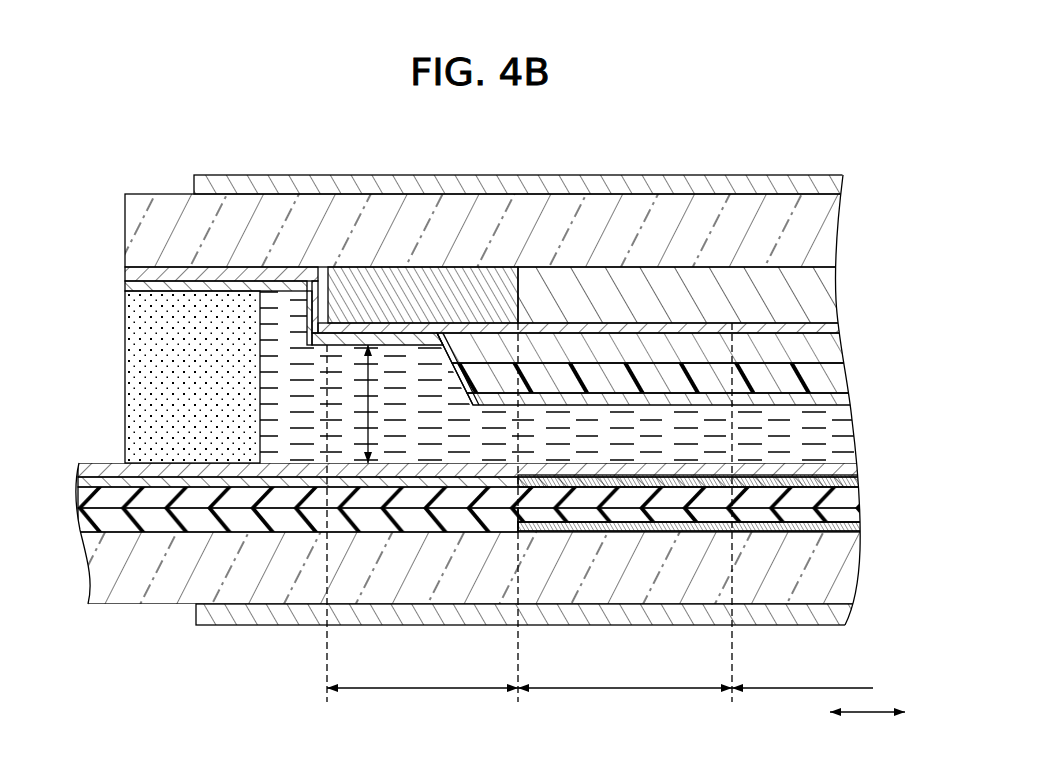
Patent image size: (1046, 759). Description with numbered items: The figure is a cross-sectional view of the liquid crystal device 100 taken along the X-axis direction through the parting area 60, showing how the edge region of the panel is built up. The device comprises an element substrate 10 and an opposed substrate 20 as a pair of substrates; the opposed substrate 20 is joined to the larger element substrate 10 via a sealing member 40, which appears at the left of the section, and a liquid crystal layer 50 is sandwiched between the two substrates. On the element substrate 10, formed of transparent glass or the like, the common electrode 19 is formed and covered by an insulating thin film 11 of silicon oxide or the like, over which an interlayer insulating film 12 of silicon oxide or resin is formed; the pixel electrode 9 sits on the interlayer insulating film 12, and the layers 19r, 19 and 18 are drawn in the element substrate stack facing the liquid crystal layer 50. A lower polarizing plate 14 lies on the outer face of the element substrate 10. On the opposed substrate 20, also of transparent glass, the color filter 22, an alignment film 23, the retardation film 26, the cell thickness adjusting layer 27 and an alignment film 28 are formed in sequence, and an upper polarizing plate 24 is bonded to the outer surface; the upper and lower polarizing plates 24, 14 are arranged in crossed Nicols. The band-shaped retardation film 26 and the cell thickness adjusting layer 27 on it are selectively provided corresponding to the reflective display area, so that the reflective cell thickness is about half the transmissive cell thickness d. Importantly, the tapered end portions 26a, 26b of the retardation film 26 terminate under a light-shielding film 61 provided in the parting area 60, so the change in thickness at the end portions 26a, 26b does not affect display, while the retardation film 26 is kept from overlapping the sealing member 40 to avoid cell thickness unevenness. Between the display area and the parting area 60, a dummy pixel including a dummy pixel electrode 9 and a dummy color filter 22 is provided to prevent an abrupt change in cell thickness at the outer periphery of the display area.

The liquid crystal device 100 is at (838, 143).
The upper polarizing plate 24 is at (828, 182).
The opposed substrate 20 is at (826, 220).
The color filter 22 is at (828, 287).
The alignment film 23 is at (836, 328).
The light-shielding film 61 is at (426, 288).
The retardation film 26 is at (831, 347).
The end portion 26a is at (443, 346).
The end portion 26b is at (461, 369).
The cell thickness adjusting layer 27 is at (838, 382).
The alignment film 28 is at (843, 398).
The sealing member 40 is at (138, 366).
The liquid crystal layer 50 is at (845, 428).
The alignment film 18 is at (850, 470).
The pixel electrode 9 is at (855, 481).
The interlayer insulating film 12 is at (852, 497).
The insulating thin film 11 is at (850, 515).
The dummy wiring 19r is at (646, 531).
The common electrode 19 is at (698, 526).
The element substrate 10 is at (845, 578).
The lower polarizing plate 14 is at (840, 612).
The parting area 60 is at (414, 686).